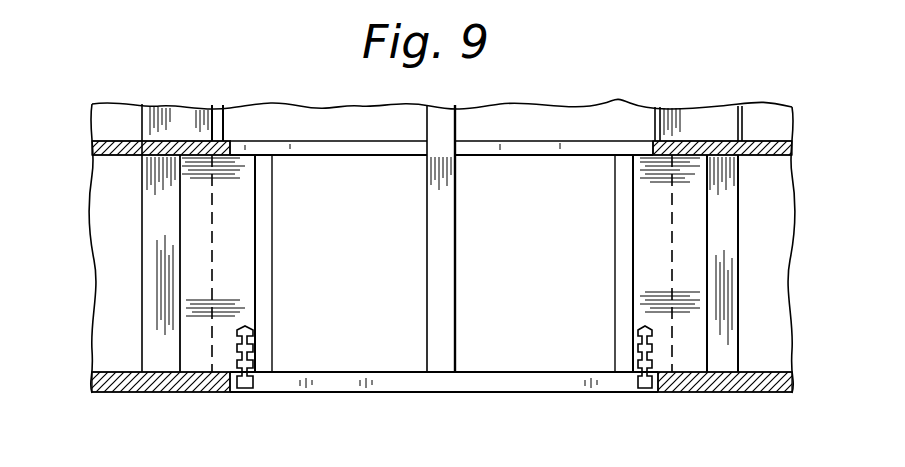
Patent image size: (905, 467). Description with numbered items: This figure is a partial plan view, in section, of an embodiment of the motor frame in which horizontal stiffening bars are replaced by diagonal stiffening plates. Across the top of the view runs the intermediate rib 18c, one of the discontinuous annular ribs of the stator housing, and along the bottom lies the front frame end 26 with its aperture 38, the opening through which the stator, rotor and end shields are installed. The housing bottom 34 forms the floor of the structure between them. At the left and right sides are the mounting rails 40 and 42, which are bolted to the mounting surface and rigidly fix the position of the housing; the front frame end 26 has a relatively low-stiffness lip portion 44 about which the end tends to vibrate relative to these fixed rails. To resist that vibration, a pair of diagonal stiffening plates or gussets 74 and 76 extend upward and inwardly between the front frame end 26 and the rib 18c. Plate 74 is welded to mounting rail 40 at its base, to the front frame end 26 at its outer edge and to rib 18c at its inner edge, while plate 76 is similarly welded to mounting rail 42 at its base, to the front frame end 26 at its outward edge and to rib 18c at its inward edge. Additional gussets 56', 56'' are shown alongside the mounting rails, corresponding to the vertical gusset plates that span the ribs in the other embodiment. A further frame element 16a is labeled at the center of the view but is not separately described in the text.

The post 16a is at (457, 278).
The intermediate rib 18c is at (354, 156).
The front frame end 26 is at (592, 393).
The bottom 34 is at (382, 296).
The aperture 38 is at (517, 393).
The mounting rail 40 is at (142, 199).
The mounting rail 42 is at (742, 216).
The lip portion 44 is at (372, 393).
The right flange 56' is at (702, 109).
The left flange 56'' is at (187, 115).
The diagonal stiffening plate 74 is at (270, 238).
The diagonal stiffening plate 76 is at (628, 236).